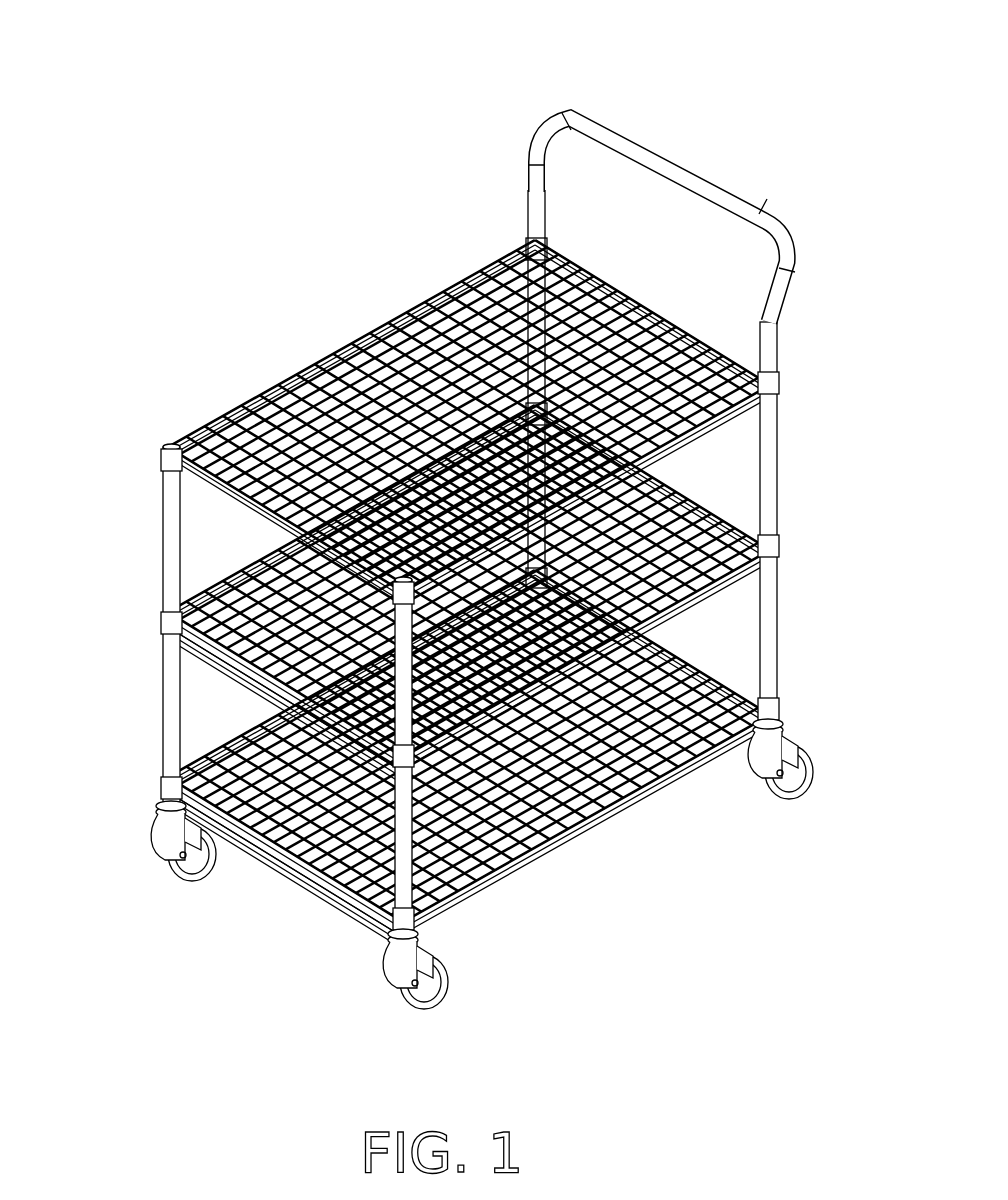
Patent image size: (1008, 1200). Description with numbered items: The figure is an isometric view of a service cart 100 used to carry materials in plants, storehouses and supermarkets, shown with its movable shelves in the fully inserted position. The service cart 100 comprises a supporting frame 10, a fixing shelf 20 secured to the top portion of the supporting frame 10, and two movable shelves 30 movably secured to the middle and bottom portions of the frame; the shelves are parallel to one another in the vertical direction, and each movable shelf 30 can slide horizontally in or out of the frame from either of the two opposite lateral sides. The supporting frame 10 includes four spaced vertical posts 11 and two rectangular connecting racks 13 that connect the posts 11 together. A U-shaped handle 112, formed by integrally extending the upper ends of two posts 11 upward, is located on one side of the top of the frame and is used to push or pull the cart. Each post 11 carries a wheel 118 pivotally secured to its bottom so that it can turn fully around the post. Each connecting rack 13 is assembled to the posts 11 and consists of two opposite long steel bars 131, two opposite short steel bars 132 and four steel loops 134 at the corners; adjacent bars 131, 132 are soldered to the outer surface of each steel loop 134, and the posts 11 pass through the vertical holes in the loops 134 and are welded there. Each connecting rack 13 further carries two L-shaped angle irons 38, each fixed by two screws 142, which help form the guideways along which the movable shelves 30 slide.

The service cart 100 is at (523, 34).
The U-shaped handle 112 is at (668, 160).
The fixing shelf 20 is at (318, 385).
The supporting frame 10 is at (472, 547).
The vertical post 11 is at (172, 527).
The movable shelf 30 is at (465, 693).
The long steel bar 131 is at (726, 580).
The steel loop 134 is at (165, 627).
The short steel bar 132 is at (215, 666).
The L-shaped angle iron 38 is at (262, 845).
The screw 142 is at (365, 908).
The connecting rack 13 is at (540, 853).
The wheel 118 is at (790, 800).